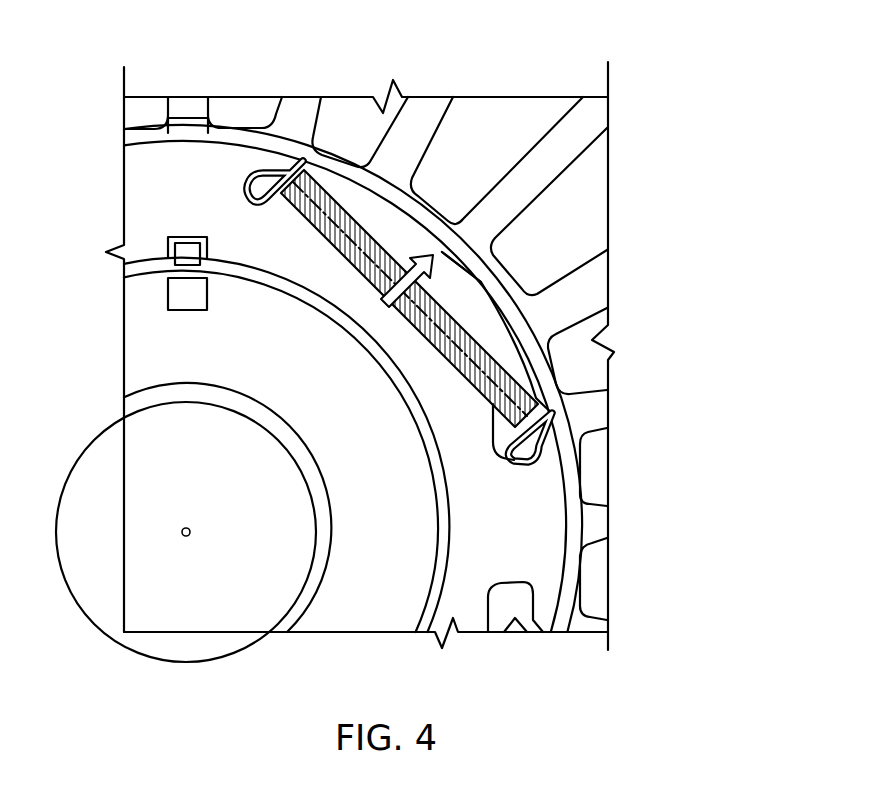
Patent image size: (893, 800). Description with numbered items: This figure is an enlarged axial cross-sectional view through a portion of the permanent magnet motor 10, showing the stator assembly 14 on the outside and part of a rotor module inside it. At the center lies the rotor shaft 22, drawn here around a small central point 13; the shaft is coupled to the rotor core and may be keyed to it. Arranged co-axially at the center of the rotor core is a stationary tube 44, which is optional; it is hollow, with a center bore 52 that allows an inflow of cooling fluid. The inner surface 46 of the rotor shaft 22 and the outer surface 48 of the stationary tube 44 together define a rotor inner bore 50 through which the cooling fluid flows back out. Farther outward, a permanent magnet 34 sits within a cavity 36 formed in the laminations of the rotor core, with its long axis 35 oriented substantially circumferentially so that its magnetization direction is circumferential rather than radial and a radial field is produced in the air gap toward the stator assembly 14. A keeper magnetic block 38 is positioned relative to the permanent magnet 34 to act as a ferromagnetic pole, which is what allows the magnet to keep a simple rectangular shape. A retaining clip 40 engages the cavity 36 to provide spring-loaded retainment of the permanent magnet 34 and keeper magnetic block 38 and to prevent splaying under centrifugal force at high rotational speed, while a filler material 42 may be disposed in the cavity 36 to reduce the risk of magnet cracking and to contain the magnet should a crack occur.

The permanent magnet motor 10 is at (700, 50).
The axis of rotation 13 is at (181, 528).
The stator assembly 14 is at (568, 166).
The rotor shaft 22 is at (332, 395).
The permanent magnet 34 is at (327, 210).
The long axis 35 is at (295, 170).
The cavity 36 is at (478, 342).
The keeper magnetic block 38 is at (497, 267).
The retaining clip 40 is at (410, 210).
The filler material 42 is at (495, 408).
The stationary tube 44 is at (167, 392).
The inner surface 46 is at (238, 345).
The outer surface 48 is at (350, 603).
The rotor inner bore 50 is at (365, 513).
The center bore 52 is at (242, 540).